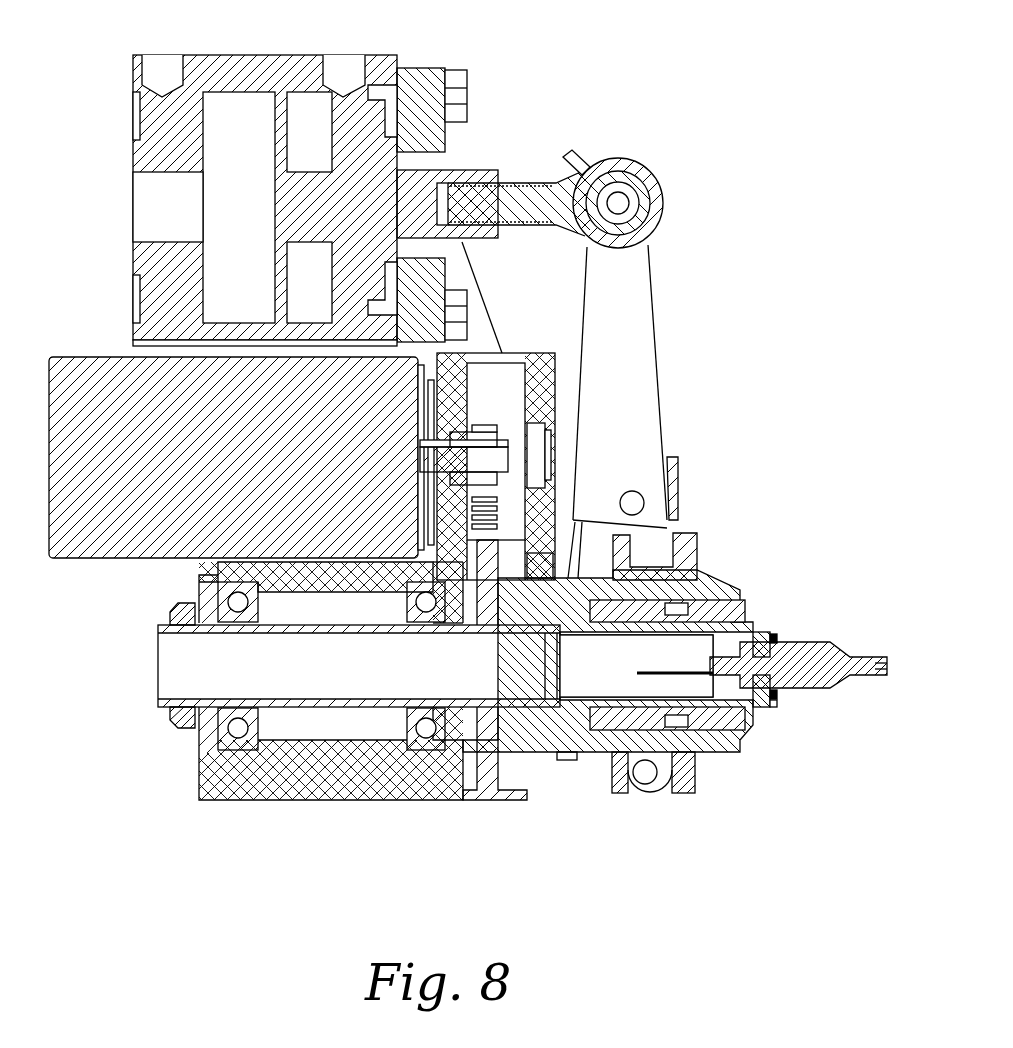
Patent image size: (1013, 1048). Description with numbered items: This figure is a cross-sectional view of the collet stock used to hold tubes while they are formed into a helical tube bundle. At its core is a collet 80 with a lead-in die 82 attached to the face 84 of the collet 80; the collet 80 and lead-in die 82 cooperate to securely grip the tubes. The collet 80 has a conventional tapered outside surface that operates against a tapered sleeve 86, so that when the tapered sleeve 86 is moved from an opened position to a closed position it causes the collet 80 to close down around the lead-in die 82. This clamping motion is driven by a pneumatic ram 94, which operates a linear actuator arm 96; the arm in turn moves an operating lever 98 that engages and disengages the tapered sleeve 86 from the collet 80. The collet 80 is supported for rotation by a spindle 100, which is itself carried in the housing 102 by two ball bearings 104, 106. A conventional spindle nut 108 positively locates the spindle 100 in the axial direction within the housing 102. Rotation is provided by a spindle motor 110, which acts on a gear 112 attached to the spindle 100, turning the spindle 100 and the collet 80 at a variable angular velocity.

The collet 80 is at (752, 640).
The lead-in die 82 is at (800, 690).
The face 84 is at (773, 700).
The tapered sleeve 86 is at (740, 614).
The pneumatic ram 94 is at (237, 55).
The linear actuator arm 96 is at (525, 188).
The operating lever 98 is at (645, 293).
The spindle 100 is at (299, 706).
The housing 102 is at (403, 800).
The ball bearing 104 is at (428, 720).
The ball bearing 106 is at (233, 710).
The spindle nut 108 is at (185, 722).
The spindle motor 110 is at (103, 357).
The gear 112 is at (488, 795).